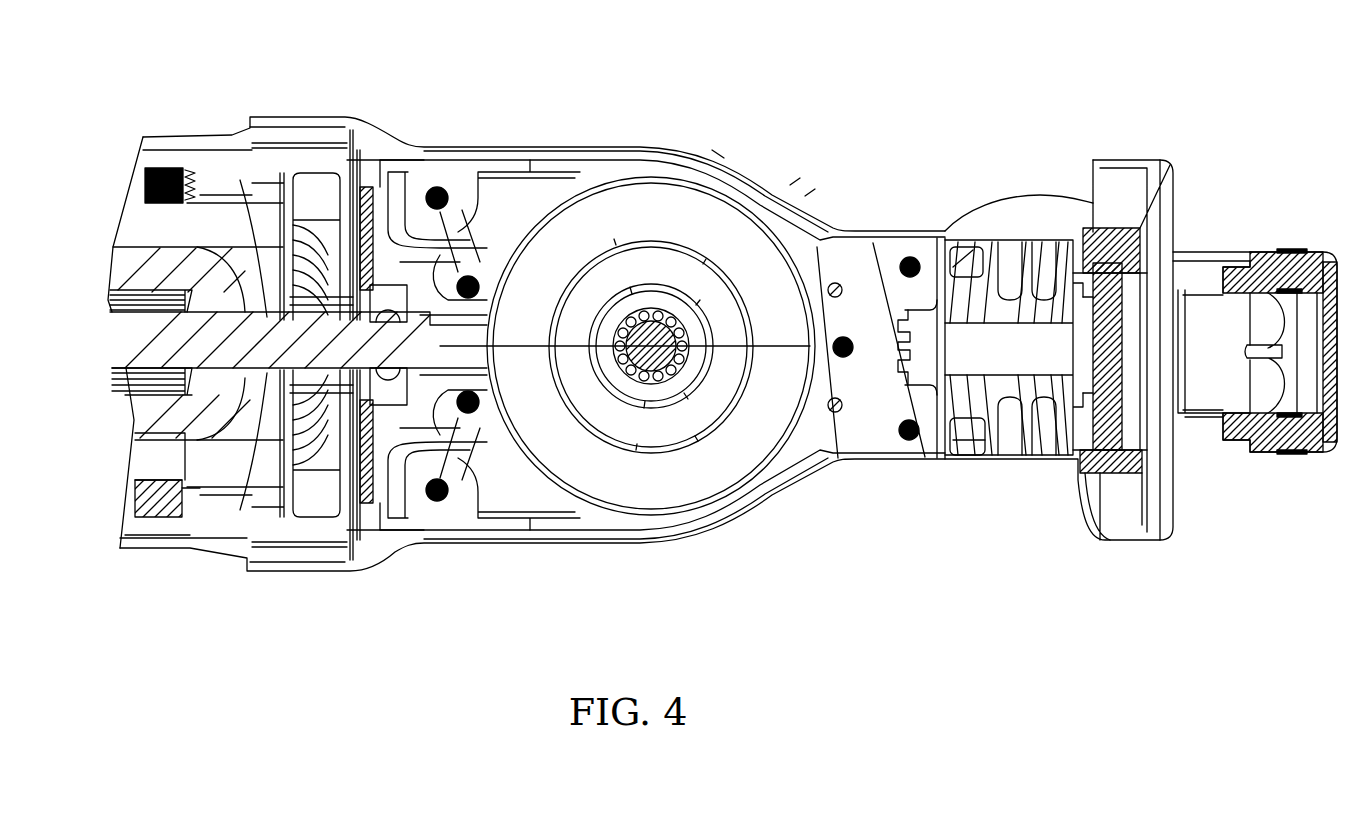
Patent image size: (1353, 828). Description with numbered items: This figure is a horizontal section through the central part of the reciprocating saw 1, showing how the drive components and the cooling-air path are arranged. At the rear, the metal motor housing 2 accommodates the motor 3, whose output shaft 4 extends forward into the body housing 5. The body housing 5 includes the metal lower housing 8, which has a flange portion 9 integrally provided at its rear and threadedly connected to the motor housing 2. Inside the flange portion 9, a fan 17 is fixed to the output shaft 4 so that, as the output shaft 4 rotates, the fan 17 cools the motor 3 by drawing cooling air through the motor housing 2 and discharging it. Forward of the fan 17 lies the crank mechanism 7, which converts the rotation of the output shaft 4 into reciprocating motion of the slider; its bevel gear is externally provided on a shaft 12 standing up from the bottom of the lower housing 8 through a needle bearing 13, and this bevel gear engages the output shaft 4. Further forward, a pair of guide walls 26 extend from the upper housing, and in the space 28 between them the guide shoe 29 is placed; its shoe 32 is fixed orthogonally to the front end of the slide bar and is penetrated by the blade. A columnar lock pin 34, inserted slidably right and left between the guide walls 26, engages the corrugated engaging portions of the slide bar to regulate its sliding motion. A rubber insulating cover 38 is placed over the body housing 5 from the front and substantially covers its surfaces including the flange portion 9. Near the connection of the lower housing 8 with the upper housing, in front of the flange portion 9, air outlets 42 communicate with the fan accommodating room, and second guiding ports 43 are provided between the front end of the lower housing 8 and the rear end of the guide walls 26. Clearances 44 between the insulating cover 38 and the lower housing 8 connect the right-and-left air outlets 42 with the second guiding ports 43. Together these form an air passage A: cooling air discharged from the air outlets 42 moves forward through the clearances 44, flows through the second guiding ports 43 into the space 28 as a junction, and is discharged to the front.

The reciprocating saw 1 is at (1040, 136).
The motor housing 2 is at (160, 140).
The motor 3 is at (118, 340).
The output shaft 4 is at (252, 320).
The body housing 5 is at (771, 197).
The crank mechanism 7 is at (660, 191).
The lower housing 8 is at (538, 168).
The flange portion 9 is at (352, 200).
The shaft 12 is at (653, 387).
The needle bearing 13 is at (694, 387).
The fan 17 is at (318, 200).
The guide walls 26 is at (993, 252).
The space 28 is at (1190, 300).
The guide shoe 29 is at (1203, 417).
The shoe 32 is at (1323, 250).
The lock pin 34 is at (1085, 485).
The insulating cover 38 is at (833, 224).
The air outlets 42 is at (400, 170).
The second guiding ports 43 is at (938, 245).
The clearances 44 is at (597, 165).
The air passage A is at (718, 155).